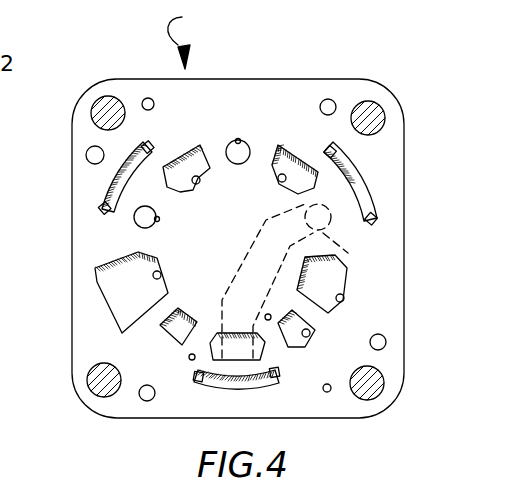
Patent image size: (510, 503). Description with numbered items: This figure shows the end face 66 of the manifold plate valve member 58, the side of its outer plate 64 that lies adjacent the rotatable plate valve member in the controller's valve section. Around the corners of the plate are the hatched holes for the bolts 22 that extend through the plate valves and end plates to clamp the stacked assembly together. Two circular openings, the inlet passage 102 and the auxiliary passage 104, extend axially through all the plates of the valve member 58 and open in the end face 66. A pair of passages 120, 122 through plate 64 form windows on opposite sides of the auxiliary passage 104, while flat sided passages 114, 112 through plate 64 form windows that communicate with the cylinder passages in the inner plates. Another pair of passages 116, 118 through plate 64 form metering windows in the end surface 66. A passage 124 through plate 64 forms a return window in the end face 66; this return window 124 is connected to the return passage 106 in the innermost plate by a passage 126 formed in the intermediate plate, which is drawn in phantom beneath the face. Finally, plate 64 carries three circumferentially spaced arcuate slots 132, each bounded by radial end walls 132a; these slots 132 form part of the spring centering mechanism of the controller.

The bolts 22 is at (108, 97).
The manifold plate valve member 58 is at (188, 39).
The plate 64 is at (236, 243).
The end face 66 is at (246, 90).
The inlet passage 102 is at (160, 220).
The auxiliary passage 104 is at (238, 139).
The return passage 106 is at (350, 265).
The flat sided passage 112 is at (183, 307).
The flat sided passage 114 is at (306, 336).
The metering window passage 116 is at (155, 274).
The metering window passage 118 is at (337, 293).
The window passage 120 is at (186, 178).
The window passage 122 is at (280, 177).
The return window 124 is at (264, 350).
The passage 126 is at (259, 235).
The arcuate slots 132 is at (110, 187).
The radial end walls 132a is at (150, 156).